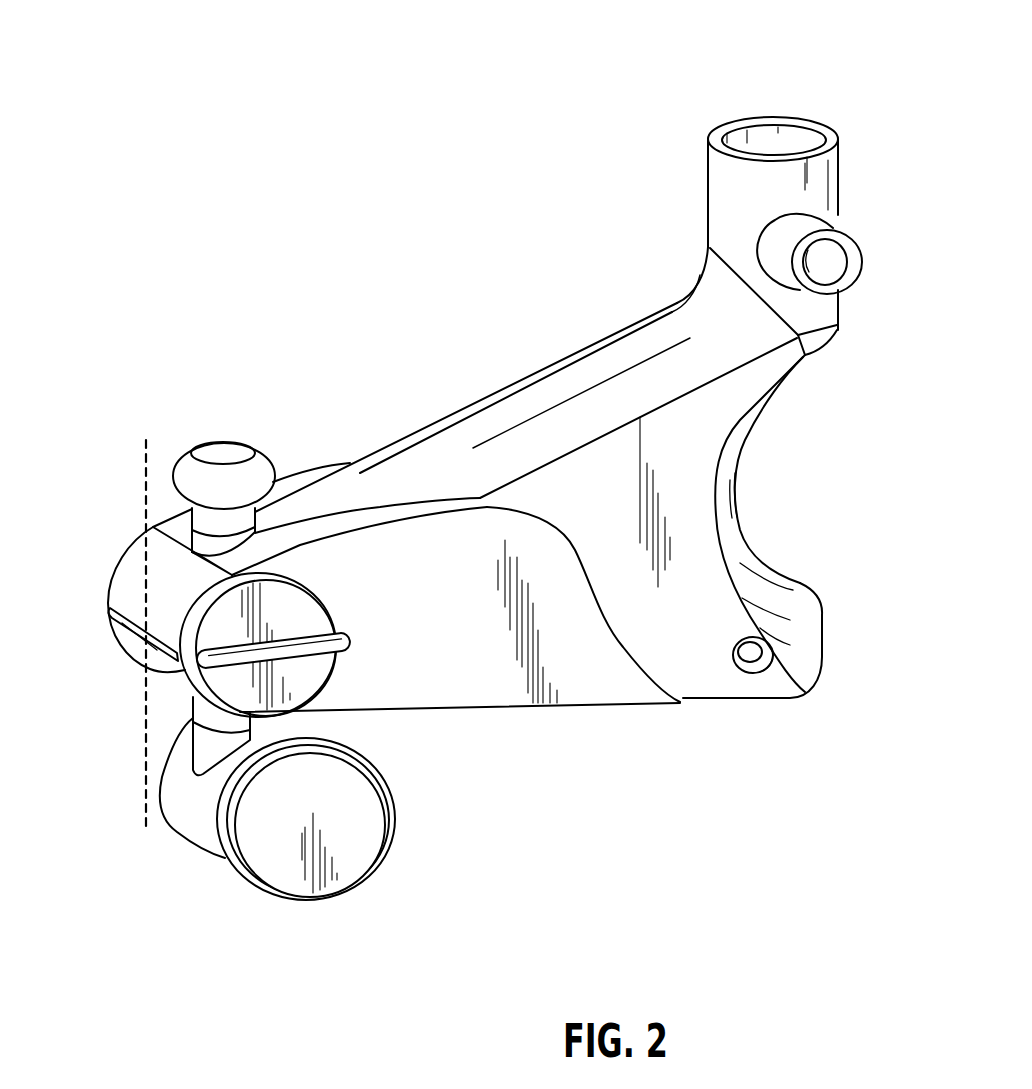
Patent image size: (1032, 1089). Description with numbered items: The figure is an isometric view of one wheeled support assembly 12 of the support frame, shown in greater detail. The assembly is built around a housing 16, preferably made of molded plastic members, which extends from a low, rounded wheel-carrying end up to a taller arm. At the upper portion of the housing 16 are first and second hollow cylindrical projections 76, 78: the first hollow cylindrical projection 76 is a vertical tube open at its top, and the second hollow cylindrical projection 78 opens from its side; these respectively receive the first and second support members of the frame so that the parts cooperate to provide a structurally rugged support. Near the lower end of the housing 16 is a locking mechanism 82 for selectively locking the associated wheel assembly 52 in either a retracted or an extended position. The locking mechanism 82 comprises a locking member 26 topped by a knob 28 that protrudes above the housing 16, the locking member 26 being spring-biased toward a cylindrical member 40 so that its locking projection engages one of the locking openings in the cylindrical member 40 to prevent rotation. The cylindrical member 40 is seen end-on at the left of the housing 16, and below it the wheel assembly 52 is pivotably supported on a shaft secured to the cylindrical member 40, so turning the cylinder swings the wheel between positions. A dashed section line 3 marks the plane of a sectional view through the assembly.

The section line 3- 3 is at (143, 460).
The wheeled support assembly 12 is at (405, 392).
The housing 16 is at (503, 690).
The locking member 26 is at (222, 522).
The knob 28 is at (187, 463).
The cylindrical member 40 is at (152, 650).
The wheel assembly 52 is at (363, 815).
The first hollow cylindrical projection 76 is at (812, 132).
The second hollow cylindrical projection 78 is at (847, 232).
The locking mechanism 82 is at (229, 432).